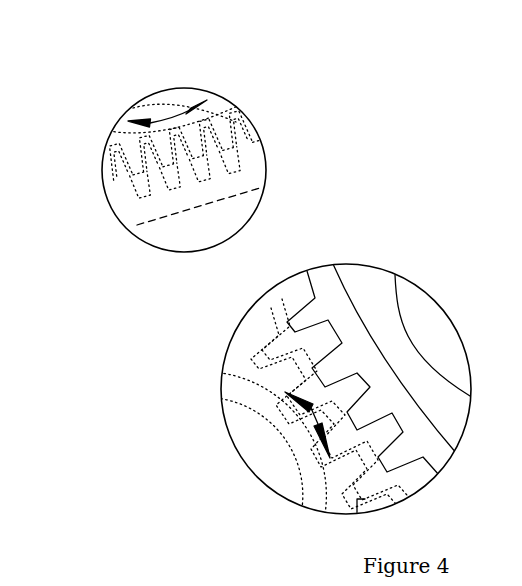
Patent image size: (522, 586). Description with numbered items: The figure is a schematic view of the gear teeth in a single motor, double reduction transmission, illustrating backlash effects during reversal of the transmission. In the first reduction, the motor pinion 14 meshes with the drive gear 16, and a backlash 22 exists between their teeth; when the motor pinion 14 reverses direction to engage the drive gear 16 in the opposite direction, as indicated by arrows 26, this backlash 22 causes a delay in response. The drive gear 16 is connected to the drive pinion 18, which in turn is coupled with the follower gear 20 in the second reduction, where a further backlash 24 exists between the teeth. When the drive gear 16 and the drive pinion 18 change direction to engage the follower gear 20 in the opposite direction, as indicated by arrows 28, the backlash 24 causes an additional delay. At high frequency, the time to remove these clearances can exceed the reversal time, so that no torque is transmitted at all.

The motor pinion 14 is at (113, 142).
The drive gear 16 is at (129, 223).
The drive pinion 18 is at (233, 430).
The follower gear 20 is at (323, 278).
The backlash 22 is at (112, 184).
The backlash 24 is at (282, 318).
The arrows 26 is at (173, 117).
The arrows 28 is at (312, 420).